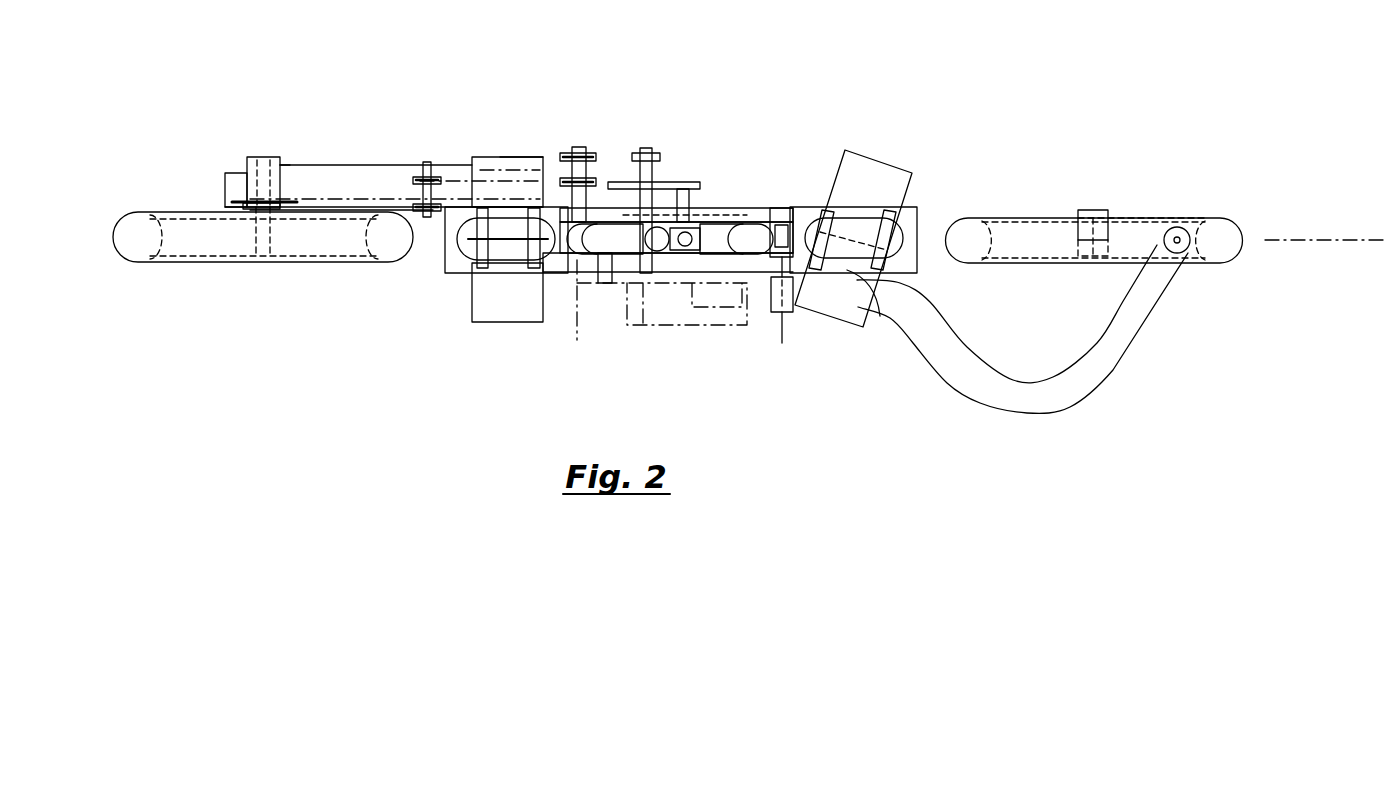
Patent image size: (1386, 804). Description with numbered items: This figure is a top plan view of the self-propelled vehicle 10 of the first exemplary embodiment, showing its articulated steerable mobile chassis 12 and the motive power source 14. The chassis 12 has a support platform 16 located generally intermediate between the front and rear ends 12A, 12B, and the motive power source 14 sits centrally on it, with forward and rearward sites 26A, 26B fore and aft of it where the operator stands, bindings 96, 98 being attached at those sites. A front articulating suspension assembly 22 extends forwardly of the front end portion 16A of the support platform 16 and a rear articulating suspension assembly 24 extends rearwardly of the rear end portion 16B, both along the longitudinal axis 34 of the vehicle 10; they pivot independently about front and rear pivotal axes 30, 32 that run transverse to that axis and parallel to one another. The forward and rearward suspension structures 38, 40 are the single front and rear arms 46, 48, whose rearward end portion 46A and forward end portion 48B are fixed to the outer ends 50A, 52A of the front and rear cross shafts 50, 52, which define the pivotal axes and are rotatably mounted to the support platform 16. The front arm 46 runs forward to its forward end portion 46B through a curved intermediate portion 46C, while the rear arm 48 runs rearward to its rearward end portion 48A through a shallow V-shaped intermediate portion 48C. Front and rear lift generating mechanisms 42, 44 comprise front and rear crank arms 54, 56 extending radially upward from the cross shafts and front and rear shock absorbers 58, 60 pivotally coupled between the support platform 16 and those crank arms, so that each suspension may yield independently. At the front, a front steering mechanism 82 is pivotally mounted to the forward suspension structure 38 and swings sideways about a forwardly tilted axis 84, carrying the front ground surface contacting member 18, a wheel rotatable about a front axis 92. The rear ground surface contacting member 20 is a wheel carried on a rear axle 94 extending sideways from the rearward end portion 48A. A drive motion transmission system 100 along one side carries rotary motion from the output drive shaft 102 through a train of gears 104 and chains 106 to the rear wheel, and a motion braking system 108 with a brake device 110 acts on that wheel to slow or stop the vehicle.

The self-propelled vehicle 10 is at (880, 100).
The articulated steerable mobile chassis 12 is at (792, 60).
The front end of the chassis 12A is at (1242, 300).
The rear end of the chassis 12B is at (170, 296).
The motive power source 14 is at (673, 327).
The support platform 16 is at (747, 217).
The front end portion of the support platform 16A is at (912, 215).
The rear end portion of the support platform 16B is at (455, 267).
The front ground surface contacting member 18 is at (1230, 220).
The rear ground surface contacting member 20 is at (145, 220).
The front articulating suspension assembly 22 is at (968, 402).
The rear articulating suspension assembly 24 is at (375, 160).
The forward site for the operator 26A is at (850, 320).
The rearward site for the operator 26B is at (513, 262).
The front pivotal axis 30 is at (783, 335).
The rear pivotal axis 32 is at (578, 340).
The longitudinal axis 34 is at (1302, 242).
The forward suspension structure 38 is at (940, 312).
The rearward suspension structure 40 is at (400, 163).
The front lift generating mechanism 42 is at (768, 203).
The rear lift generating mechanism 44 is at (605, 205).
The single front arm 46 is at (945, 355).
The rearward end portion of the single front arm 46A is at (878, 318).
The forward end portion of the single front arm 46B is at (1133, 317).
The intermediate portion of the single front arm 46C is at (1053, 390).
The single rear arm 48 is at (357, 173).
The rearward end portion of the single rear arm 48A is at (287, 162).
The forward end portion of the single rear arm 48B is at (543, 168).
The intermediate portion of the single rear arm 48C is at (447, 175).
The front cross shaft 50 is at (782, 218).
The outer end of the front cross shaft 50A is at (771, 300).
The rear cross shaft 52 is at (600, 265).
The outer end of the rear cross shaft 52A is at (573, 200).
The front crank arm 54 is at (840, 214).
The rear crank arm 56 is at (555, 267).
The front shock absorber 58 is at (735, 253).
The rear shock absorber 60 is at (624, 250).
The front steering mechanism 82 is at (1130, 218).
The axis of the front steering mechanism 84 is at (1180, 230).
The front axis 92 is at (1092, 210).
The rear axle 94 is at (268, 240).
The binding 96 is at (848, 233).
The binding 98 is at (503, 260).
The drive motion transmission system 100 is at (655, 142).
The output drive shaft 102 is at (687, 195).
The gears 104 is at (257, 207).
The chains 106 is at (340, 210).
The motion braking system 108 is at (303, 178).
The brake device 110 is at (243, 203).